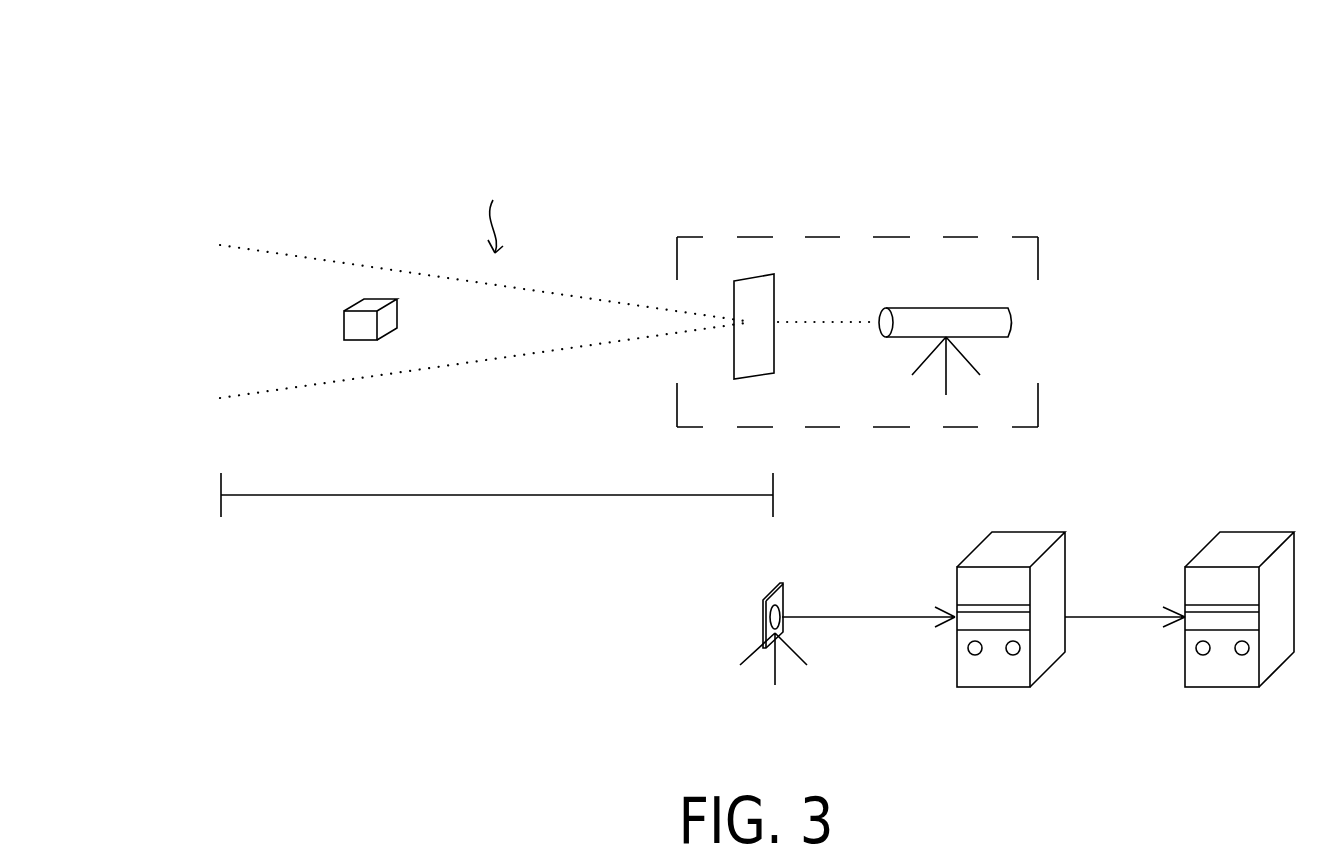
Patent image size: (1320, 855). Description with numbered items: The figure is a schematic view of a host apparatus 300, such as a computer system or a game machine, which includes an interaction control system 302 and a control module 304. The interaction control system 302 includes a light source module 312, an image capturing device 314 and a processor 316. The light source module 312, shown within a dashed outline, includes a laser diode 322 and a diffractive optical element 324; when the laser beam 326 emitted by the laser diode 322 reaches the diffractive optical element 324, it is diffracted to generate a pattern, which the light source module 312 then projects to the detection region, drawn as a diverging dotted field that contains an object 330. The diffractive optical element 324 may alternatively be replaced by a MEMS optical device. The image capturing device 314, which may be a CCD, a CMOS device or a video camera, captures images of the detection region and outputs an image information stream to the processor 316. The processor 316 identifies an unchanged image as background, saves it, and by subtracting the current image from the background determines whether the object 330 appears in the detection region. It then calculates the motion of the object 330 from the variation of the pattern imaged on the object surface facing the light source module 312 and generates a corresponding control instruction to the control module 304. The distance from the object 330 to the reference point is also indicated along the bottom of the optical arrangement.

The host apparatus 300 is at (121, 129).
The interaction control system 302 is at (648, 548).
The control module 304 is at (1223, 683).
The light source module 312 is at (827, 235).
The image capturing device 314 is at (762, 625).
The processor 316 is at (993, 683).
The laser diode 322 is at (946, 308).
The diffractive optical element 324 is at (757, 274).
The laser beam 326 is at (826, 318).
The object 330 is at (356, 322).